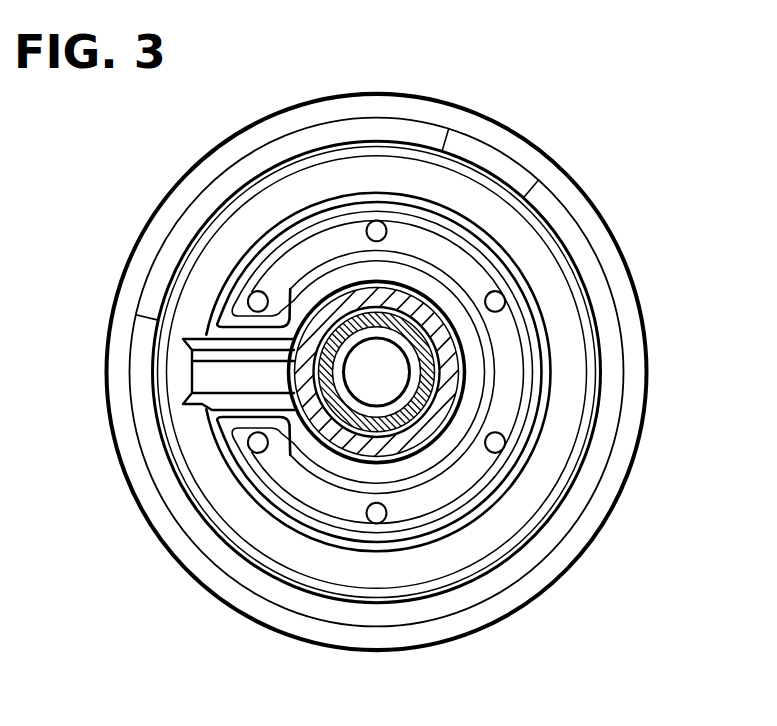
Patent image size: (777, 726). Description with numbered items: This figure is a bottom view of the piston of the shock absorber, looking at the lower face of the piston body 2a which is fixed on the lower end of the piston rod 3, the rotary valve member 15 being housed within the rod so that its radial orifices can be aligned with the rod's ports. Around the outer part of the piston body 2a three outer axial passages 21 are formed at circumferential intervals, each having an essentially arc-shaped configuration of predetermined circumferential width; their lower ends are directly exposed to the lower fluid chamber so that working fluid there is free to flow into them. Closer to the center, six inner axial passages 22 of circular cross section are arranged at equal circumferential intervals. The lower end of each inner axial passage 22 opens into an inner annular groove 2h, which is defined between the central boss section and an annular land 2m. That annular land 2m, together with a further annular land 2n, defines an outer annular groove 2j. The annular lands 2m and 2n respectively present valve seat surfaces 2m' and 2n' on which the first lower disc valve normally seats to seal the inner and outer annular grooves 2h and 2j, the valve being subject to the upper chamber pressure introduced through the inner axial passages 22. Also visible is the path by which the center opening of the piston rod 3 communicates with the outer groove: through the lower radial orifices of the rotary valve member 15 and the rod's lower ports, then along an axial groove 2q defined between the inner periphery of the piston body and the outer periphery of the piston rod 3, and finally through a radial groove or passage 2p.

The piston rod 3 is at (440, 293).
The rotary valve member 15 is at (352, 332).
The outer axial passage 21 is at (520, 565).
The inner axial passage 22 is at (262, 444).
The hub bore sleeve 2a is at (340, 436).
The inner annular groove 2h is at (517, 384).
The outer annular groove 2j is at (572, 425).
The annular land 2m is at (477, 372).
The valve seat surface 2m' is at (460, 372).
The annular land 2n is at (436, 371).
The valve seat surface 2n' is at (437, 371).
The radial groove 2p is at (207, 374).
The axial groove 2q is at (187, 342).